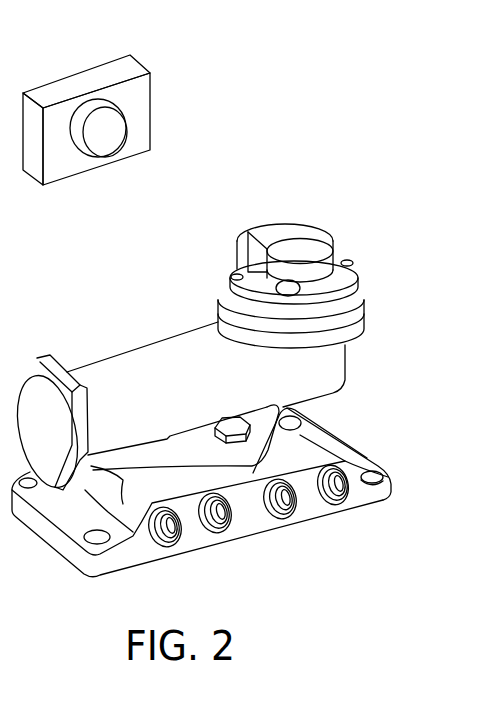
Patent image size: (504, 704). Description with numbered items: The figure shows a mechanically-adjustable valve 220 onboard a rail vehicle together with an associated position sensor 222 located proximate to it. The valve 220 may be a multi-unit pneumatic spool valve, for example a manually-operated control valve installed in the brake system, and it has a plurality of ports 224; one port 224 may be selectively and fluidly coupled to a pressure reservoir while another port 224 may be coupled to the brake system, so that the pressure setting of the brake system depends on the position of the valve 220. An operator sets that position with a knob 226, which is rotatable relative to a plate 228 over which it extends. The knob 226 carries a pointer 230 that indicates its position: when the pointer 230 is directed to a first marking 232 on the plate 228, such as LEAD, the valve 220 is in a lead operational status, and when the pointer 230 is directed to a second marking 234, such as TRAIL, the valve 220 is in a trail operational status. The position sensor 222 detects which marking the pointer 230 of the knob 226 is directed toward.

The mechanically-adjustable valve 220 is at (128, 375).
The position sensor 222 is at (78, 87).
The ports 224 is at (295, 512).
The knob 226 is at (262, 230).
The plate 228 is at (340, 280).
The pointer 230 is at (322, 240).
The first marking 232 is at (350, 261).
The second marking 234 is at (232, 273).